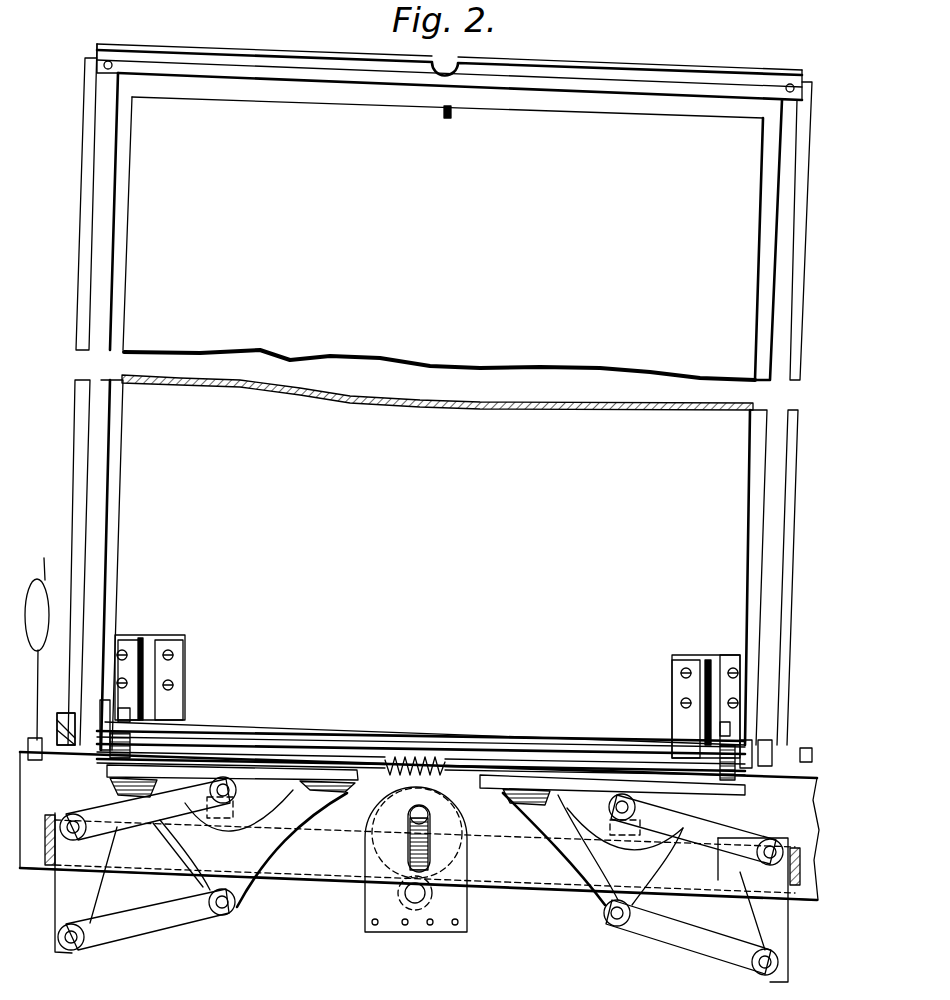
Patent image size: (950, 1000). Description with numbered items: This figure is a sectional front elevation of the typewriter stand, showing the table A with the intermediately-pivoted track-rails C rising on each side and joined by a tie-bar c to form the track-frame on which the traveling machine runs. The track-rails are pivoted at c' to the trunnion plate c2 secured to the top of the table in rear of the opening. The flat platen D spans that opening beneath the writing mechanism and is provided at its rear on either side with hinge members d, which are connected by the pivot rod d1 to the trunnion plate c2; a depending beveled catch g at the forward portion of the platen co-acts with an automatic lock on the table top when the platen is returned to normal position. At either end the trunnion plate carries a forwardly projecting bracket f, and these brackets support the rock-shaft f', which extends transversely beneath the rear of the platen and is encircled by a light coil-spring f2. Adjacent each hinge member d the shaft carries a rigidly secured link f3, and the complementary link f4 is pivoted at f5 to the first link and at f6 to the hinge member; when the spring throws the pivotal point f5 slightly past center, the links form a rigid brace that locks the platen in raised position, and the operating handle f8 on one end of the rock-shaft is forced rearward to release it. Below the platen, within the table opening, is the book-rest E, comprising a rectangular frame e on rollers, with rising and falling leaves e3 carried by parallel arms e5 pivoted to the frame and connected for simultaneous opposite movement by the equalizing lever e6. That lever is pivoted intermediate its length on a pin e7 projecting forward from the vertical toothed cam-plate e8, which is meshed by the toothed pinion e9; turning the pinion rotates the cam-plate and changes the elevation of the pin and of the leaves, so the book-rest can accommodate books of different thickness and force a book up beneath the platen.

The tie-bar c is at (449, 65).
The track-rail C is at (100, 283).
The flat platen D is at (441, 411).
The depending beveled catch g is at (452, 113).
The table A is at (419, 826).
The hinge member d is at (148, 700).
The pivot rod d1 is at (323, 737).
The rock-shaft f' is at (421, 723).
The coil-spring f2 is at (420, 757).
The rising and falling leaf e3 is at (353, 780).
The equalizing lever e6 is at (490, 822).
The toothed pinion e9 is at (400, 925).
The toothed cam-plate e8 is at (365, 822).
The pivot pin e7 is at (417, 815).
The parallel arms e5 is at (138, 812).
The rectangular frame e is at (303, 853).
The book-rest E is at (337, 883).
The trunnion plate c2 is at (45, 870).
The complementary link f4 is at (141, 642).
The pivot f6 is at (128, 665).
The pivot f5 is at (125, 712).
The bracket f is at (459, 730).
The link f3 is at (118, 745).
The pivot c' is at (429, 721).
The operating handle f8 is at (44, 558).